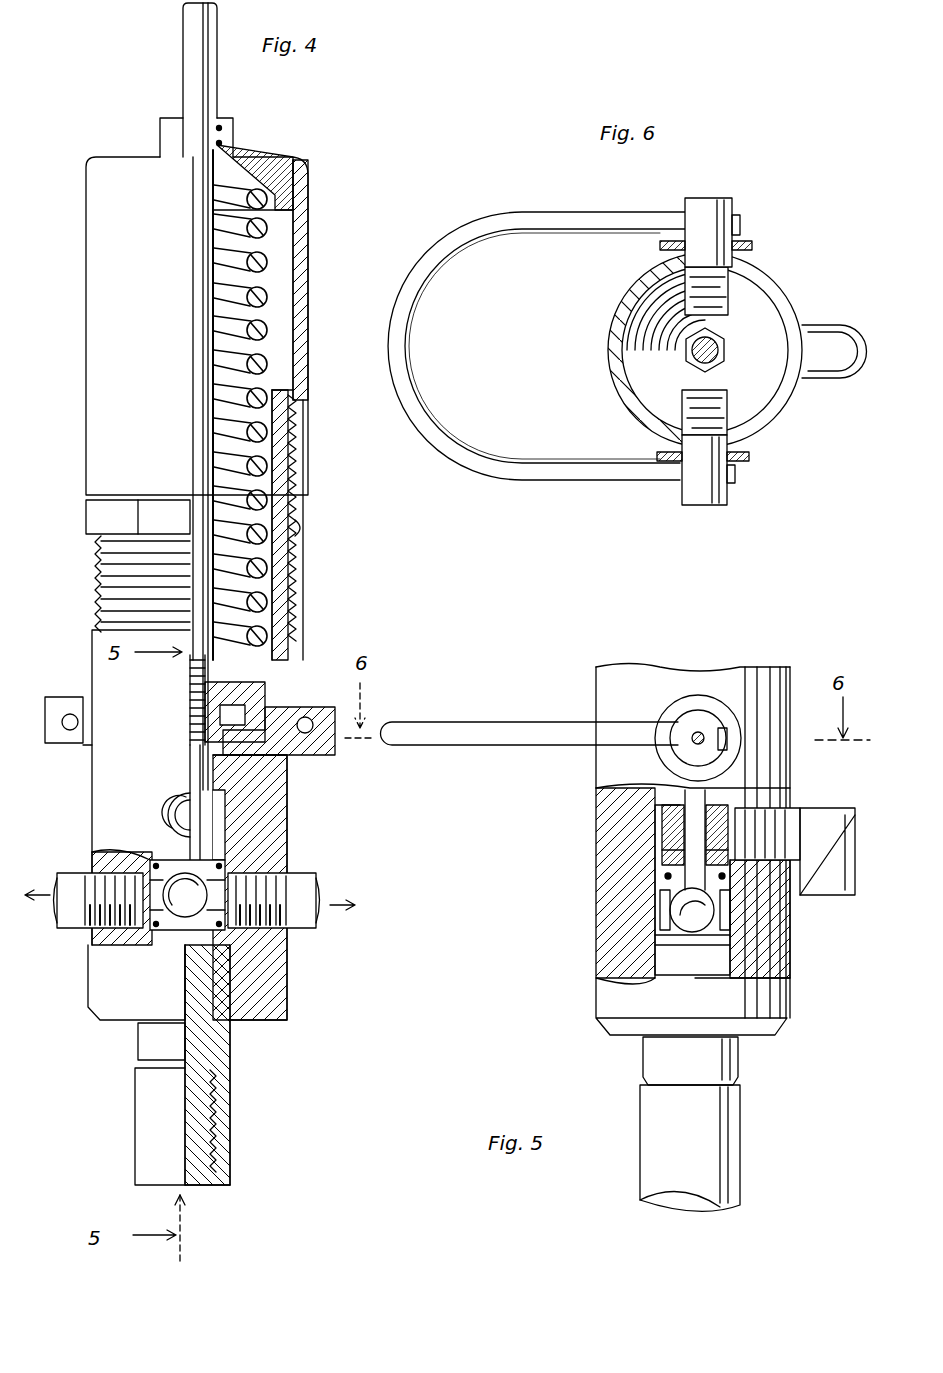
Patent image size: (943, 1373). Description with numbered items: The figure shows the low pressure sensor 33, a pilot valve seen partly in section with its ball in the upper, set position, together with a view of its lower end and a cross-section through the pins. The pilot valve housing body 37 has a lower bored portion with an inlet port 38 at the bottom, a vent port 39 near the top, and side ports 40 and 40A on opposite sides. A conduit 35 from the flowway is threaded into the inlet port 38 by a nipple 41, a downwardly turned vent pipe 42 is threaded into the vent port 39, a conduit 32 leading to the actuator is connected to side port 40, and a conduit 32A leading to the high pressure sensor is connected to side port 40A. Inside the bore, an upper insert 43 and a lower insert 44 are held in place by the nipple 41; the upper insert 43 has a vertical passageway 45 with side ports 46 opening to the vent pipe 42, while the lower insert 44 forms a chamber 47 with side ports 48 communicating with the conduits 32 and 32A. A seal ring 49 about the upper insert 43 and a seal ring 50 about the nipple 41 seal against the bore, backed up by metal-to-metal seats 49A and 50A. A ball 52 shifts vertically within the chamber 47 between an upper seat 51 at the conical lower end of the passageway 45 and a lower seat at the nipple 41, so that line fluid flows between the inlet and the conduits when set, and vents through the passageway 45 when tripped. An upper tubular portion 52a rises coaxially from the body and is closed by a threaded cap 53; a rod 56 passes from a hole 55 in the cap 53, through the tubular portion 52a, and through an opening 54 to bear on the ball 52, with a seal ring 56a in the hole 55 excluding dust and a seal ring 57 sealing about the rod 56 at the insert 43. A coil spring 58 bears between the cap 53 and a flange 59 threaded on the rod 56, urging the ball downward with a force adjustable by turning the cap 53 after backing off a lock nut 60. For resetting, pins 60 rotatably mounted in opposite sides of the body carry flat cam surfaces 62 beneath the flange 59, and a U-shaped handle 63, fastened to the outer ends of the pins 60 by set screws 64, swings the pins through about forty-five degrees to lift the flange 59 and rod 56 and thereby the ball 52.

In FIG. 4, the conduit 32 is at (300, 875).
In FIG. 4, the conduit 32A is at (75, 875).
In FIG. 4, the low pressure sensor 33 is at (308, 225).
In FIG. 4, the conduit 35 is at (232, 1140).
In FIG. 5, the conduit 35 is at (742, 1180).
In FIG. 4, the pilot valve housing body 37 is at (298, 568).
In FIG. 4, the inlet port 38 is at (235, 985).
In FIG. 4, the vent port 39 is at (162, 810).
In FIG. 4, the side port 40 is at (255, 935).
In FIG. 4, the side port 40A is at (136, 982).
In FIG. 4, the nipple 41 is at (137, 1040).
In FIG. 5, the nipple 41 is at (742, 1062).
In FIG. 4, the vent pipe 42 is at (176, 795).
In FIG. 6, the vent pipe 42 is at (832, 325).
In FIG. 5, the vent pipe 42 is at (835, 808).
In FIG. 5, the upper insert 43 is at (660, 808).
In FIG. 5, the lower insert 44 is at (668, 918).
In FIG. 5, the vertical passageway 45 is at (688, 853).
In FIG. 5, the side ports 46 is at (665, 830).
In FIG. 5, the chamber 47 is at (740, 925).
In FIG. 5, the side ports 48 is at (660, 905).
In FIG. 5, the seal ring 49 is at (668, 872).
In FIG. 5, the seat 49A is at (826, 863).
In FIG. 5, the seal ring 50 is at (660, 945).
In FIG. 5, the seat 50A is at (650, 985).
In FIG. 5, the seat 51 is at (740, 895).
In FIG. 5, the ball 52 is at (685, 930).
In FIG. 4, the upper tubular portion 52a is at (96, 620).
In FIG. 6, the upper tubular portion 52a is at (625, 340).
In FIG. 4, the cap 53 is at (150, 300).
In FIG. 4, the opening 54 is at (192, 782).
In FIG. 4, the hole 55 is at (215, 135).
In FIG. 4, the rod 56 is at (199, 345).
In FIG. 6, the rod 56 is at (695, 352).
In FIG. 4, the seal ring 56a is at (218, 128).
In FIG. 4, the seal ring 57 is at (228, 783).
In FIG. 4, the coil spring 58 is at (262, 465).
In FIG. 4, the flange 59 is at (212, 692).
In FIG. 4, the pins 60 is at (300, 525).
In FIG. 6, the pins 60 is at (734, 207).
In FIG. 5, the pins 60 is at (700, 712).
In FIG. 4, the flat cam surface 62 is at (212, 705).
In FIG. 6, the flat cam surface 62 is at (715, 410).
In FIG. 4, the U-shaped handle 63 is at (70, 715).
In FIG. 6, the U-shaped handle 63 is at (545, 230).
In FIG. 5, the U-shaped handle 63 is at (493, 720).
In FIG. 4, the set screws 64 is at (332, 750).
In FIG. 5, the set screws 64 is at (692, 735).